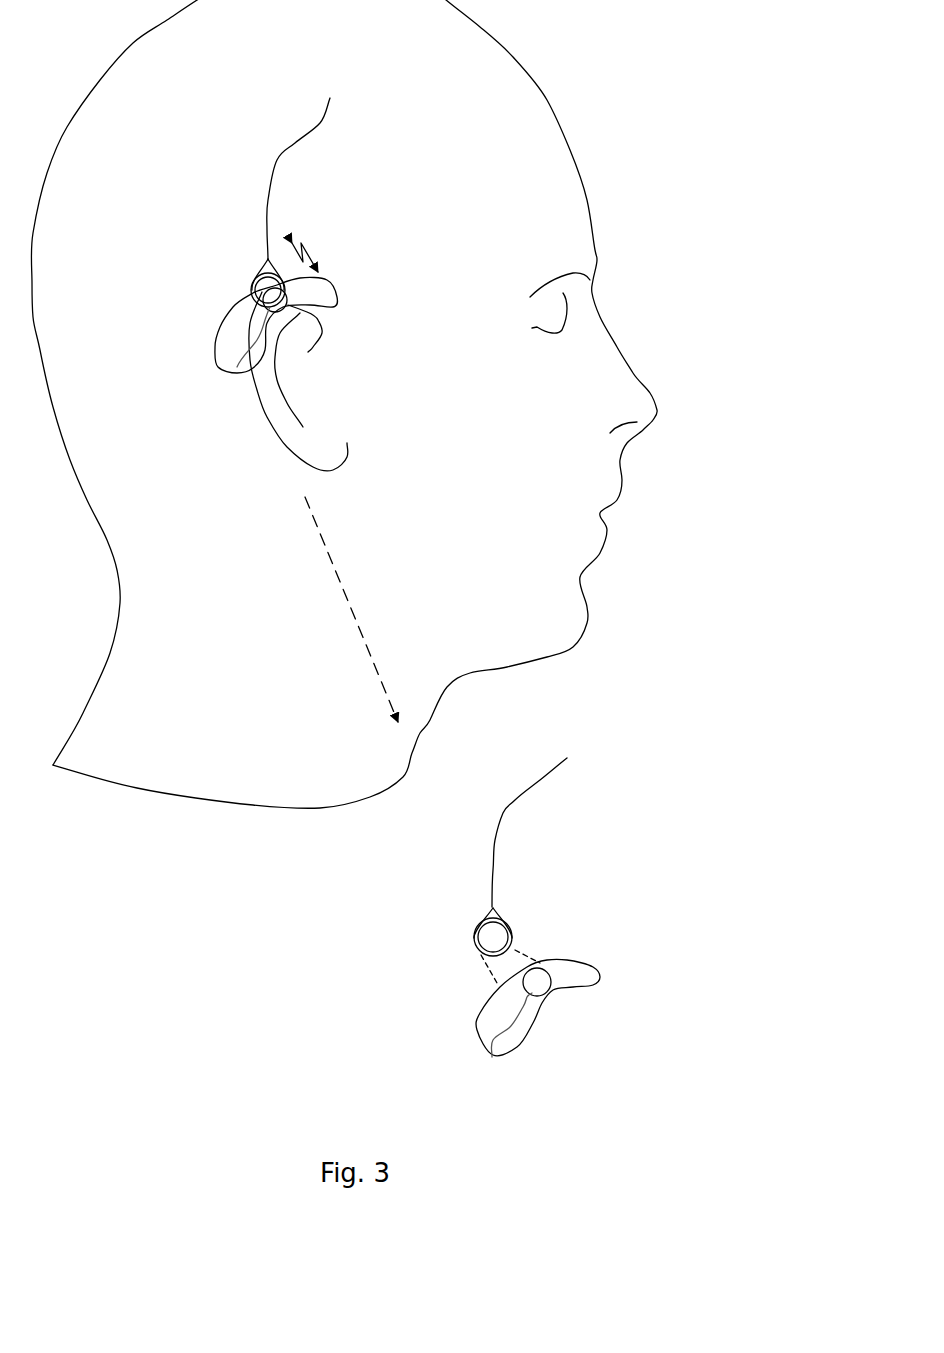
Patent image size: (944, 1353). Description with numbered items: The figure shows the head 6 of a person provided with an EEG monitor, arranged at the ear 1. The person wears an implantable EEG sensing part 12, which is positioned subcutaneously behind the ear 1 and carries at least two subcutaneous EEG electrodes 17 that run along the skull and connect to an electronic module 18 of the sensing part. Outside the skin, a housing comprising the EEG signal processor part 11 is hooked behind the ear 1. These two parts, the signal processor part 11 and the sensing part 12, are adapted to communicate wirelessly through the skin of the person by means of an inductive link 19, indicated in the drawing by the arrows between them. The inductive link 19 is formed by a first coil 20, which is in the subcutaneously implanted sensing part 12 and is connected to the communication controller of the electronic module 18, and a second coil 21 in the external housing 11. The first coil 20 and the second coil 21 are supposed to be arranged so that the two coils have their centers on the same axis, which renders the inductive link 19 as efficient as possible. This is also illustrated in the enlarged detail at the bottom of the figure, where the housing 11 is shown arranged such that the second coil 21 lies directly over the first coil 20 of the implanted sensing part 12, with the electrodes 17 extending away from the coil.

The ear 1 is at (333, 352).
The head 6 is at (583, 77).
The EEG signal processor part 11 is at (207, 350).
The implantable EEG sensing part 12 is at (248, 213).
The subcutaneous EEG electrodes 17 is at (277, 158).
The electronic module 18 is at (233, 288).
The inductive link 19 is at (318, 245).
The first coil 20 is at (252, 283).
The second coil 21 is at (237, 367).